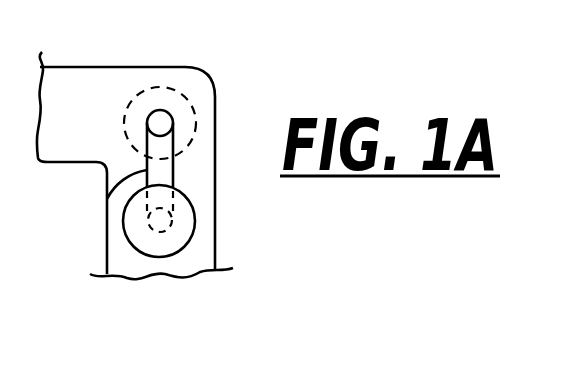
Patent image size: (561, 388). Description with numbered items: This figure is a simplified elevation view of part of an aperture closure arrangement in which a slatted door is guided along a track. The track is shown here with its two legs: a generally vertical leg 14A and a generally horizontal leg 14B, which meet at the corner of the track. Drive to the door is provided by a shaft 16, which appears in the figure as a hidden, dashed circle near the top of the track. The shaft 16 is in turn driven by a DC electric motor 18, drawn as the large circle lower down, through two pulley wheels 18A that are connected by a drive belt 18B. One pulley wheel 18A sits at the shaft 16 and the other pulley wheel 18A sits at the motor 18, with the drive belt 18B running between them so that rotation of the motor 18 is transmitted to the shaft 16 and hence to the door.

The generally vertical leg 14A is at (200, 254).
The generally horizontal leg 14B is at (77, 87).
The shaft 16 is at (198, 118).
The DC electric motor 18 is at (195, 222).
The pulley wheels 18A is at (158, 110).
The drive belt 18B is at (108, 195).